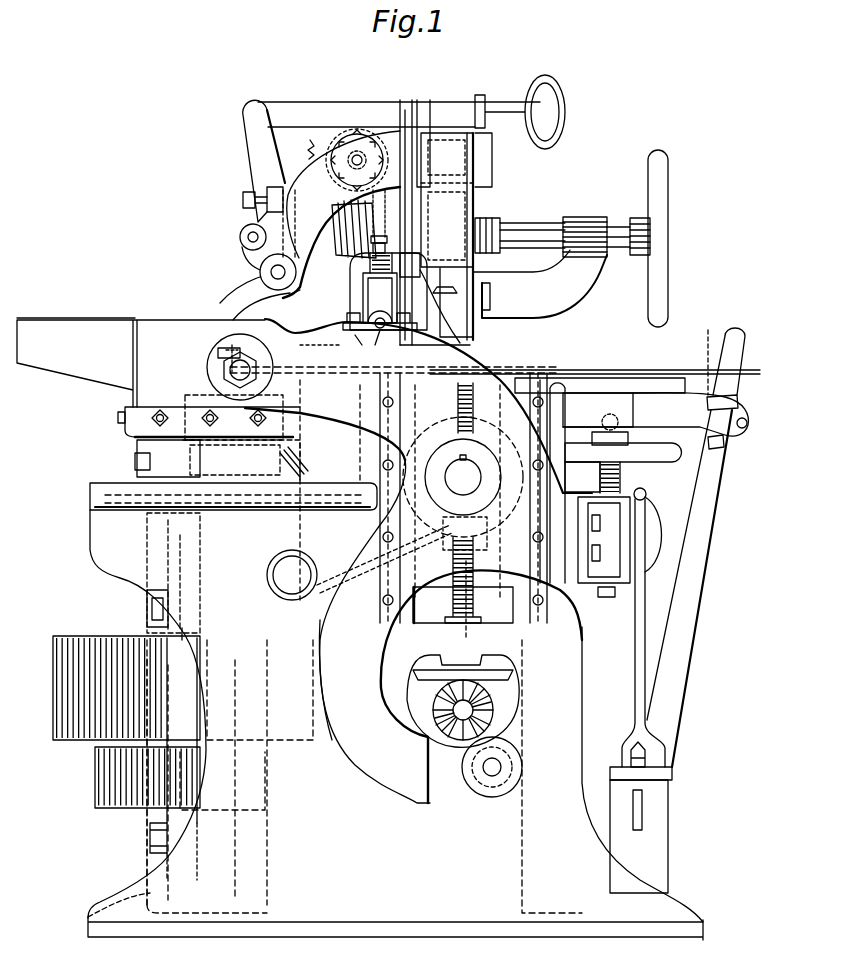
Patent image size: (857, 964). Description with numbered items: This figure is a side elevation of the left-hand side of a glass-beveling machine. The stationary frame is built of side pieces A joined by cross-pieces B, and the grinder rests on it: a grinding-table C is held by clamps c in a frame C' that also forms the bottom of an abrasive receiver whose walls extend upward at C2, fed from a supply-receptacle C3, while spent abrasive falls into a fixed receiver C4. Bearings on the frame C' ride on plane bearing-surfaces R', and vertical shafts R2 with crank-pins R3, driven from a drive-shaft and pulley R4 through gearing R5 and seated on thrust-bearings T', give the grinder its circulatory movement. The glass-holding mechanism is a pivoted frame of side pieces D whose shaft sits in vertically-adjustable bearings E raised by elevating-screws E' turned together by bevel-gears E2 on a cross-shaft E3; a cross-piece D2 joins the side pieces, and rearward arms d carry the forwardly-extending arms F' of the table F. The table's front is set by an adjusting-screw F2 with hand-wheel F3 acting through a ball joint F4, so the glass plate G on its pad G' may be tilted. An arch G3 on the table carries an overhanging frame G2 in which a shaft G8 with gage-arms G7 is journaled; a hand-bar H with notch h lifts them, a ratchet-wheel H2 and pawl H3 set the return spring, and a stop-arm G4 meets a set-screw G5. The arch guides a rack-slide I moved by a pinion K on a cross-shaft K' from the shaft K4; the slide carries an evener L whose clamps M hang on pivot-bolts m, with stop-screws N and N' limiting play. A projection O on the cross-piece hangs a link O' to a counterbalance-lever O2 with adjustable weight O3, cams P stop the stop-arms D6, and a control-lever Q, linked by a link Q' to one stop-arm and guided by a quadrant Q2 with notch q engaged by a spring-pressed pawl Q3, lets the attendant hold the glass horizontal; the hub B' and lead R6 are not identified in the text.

The side pieces A is at (400, 894).
The cross-pieces B is at (395, 725).
The frame hub B' is at (463, 477).
The grinding-table C is at (221, 367).
The clamps c is at (176, 420).
The frame C' is at (199, 445).
The upwardly-extended walls C2 is at (143, 318).
The supply-receptacle C3 is at (141, 362).
The fixed receiver C4 is at (283, 527).
The side pieces of pivoted frame D is at (490, 372).
The rearwardly-extending arms d is at (310, 326).
The cross-piece D2 is at (608, 588).
The stop-arms D6 is at (340, 693).
The vertically-adjustable bearings E is at (463, 598).
The elevating-screws E' is at (457, 503).
The bevel-gears E2 is at (470, 697).
The cross-shaft E3 is at (470, 712).
The table F is at (586, 481).
The forwardly-extending arms F' is at (655, 414).
The adjusting-screw F2 is at (622, 477).
The hand-wheel F3 is at (681, 456).
The ball joint F4 is at (614, 428).
The glass plate G is at (595, 360).
The pad G' is at (600, 369).
The overhanging frame G2 is at (341, 214).
The arch G3 is at (456, 236).
The stop-arm G4 is at (256, 220).
The set-screw G5 is at (243, 198).
The gage-arms G7 is at (240, 297).
The shaft G8 is at (260, 270).
The hand-bar H is at (497, 108).
The notch h is at (440, 122).
The ratchet-wheel H2 is at (298, 292).
The pawl H3 is at (240, 243).
The slide I is at (362, 224).
The pinion K is at (363, 130).
The cross-shaft K' is at (350, 119).
The shaft K4 is at (522, 232).
The evener L is at (420, 303).
The clamps M is at (320, 352).
The pivot-bolts m is at (387, 346).
The stop-screws N is at (405, 222).
The stop-screws N' is at (388, 348).
The projection O is at (696, 534).
The link O' is at (635, 627).
The counterbalance-lever O2 is at (645, 807).
The adjustable weight O3 is at (660, 856).
The cams P is at (520, 786).
The control-lever Q is at (696, 547).
The notch q is at (712, 405).
The link Q' is at (622, 739).
The quadrant Q2 is at (742, 412).
The spring-pressed pawl Q3 is at (725, 443).
The plane bearing-surfaces R' is at (216, 496).
The vertical shafts R2 is at (147, 625).
The crank-pins R3 is at (120, 520).
The drive-shaft and pulley R4 is at (53, 708).
The gearing R5 is at (95, 776).
The link R6 is at (88, 905).
The thrust-bearings T' is at (153, 851).